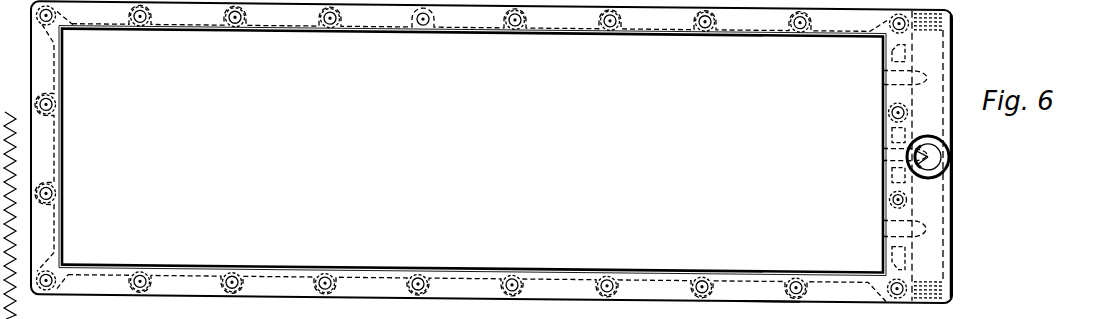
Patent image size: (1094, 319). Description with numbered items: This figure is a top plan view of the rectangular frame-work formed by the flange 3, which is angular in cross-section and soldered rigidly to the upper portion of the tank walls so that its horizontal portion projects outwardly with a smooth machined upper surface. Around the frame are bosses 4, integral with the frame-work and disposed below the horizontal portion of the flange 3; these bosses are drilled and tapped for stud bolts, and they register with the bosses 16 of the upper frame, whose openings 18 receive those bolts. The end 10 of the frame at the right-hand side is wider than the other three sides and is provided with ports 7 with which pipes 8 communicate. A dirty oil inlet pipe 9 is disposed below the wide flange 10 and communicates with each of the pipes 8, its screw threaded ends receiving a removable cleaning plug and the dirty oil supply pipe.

The flange 3 is at (183, 281).
The bosses 4 is at (243, 291).
The ports 7 is at (883, 77).
The pipes 8 is at (893, 86).
The dirty oil inlet pipe 9 is at (946, 61).
The end of the rectangular frame 10 is at (953, 39).
The bosses 16 is at (770, 310).
The openings 18 is at (231, 286).